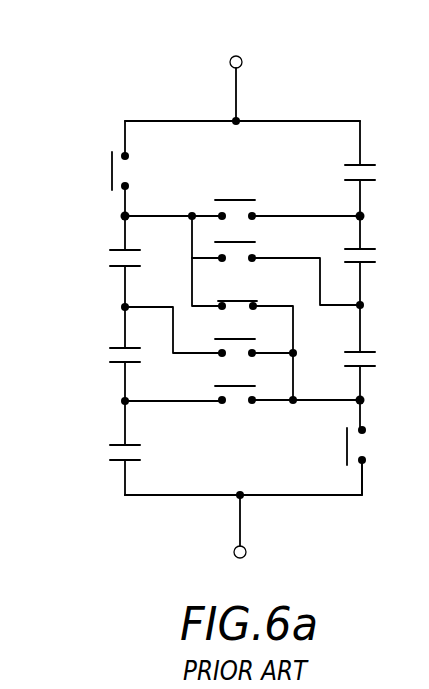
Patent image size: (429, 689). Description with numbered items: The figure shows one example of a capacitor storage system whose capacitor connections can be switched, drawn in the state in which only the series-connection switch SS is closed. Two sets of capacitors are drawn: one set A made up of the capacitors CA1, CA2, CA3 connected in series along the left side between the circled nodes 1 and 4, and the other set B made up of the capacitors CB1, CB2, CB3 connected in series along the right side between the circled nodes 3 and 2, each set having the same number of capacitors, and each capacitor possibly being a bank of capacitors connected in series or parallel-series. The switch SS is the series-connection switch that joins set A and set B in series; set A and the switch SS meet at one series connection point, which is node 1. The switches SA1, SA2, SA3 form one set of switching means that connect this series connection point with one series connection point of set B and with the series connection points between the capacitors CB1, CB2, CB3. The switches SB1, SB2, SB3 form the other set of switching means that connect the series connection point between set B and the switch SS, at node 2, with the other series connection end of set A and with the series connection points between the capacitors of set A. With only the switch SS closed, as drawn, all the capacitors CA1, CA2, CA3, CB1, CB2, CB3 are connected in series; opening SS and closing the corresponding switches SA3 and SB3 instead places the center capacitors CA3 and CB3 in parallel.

The node 1 is at (106, 213).
The node 2 is at (379, 400).
The node 3 is at (378, 159).
The node 4 is at (110, 513).
The switch SA1 is at (142, 171).
The switch SA2 is at (235, 190).
The switch SA3 is at (260, 246).
The series-connection switch SS is at (237, 288).
The switch SB1 is at (380, 445).
The switch SB2 is at (240, 412).
The switch SB3 is at (220, 337).
The capacitor CA1 is at (149, 454).
The capacitor CA2 is at (145, 369).
The center capacitor CA3 is at (145, 258).
The capacitor CB1 is at (381, 170).
The capacitor CB2 is at (381, 260).
The center capacitor CB3 is at (381, 364).